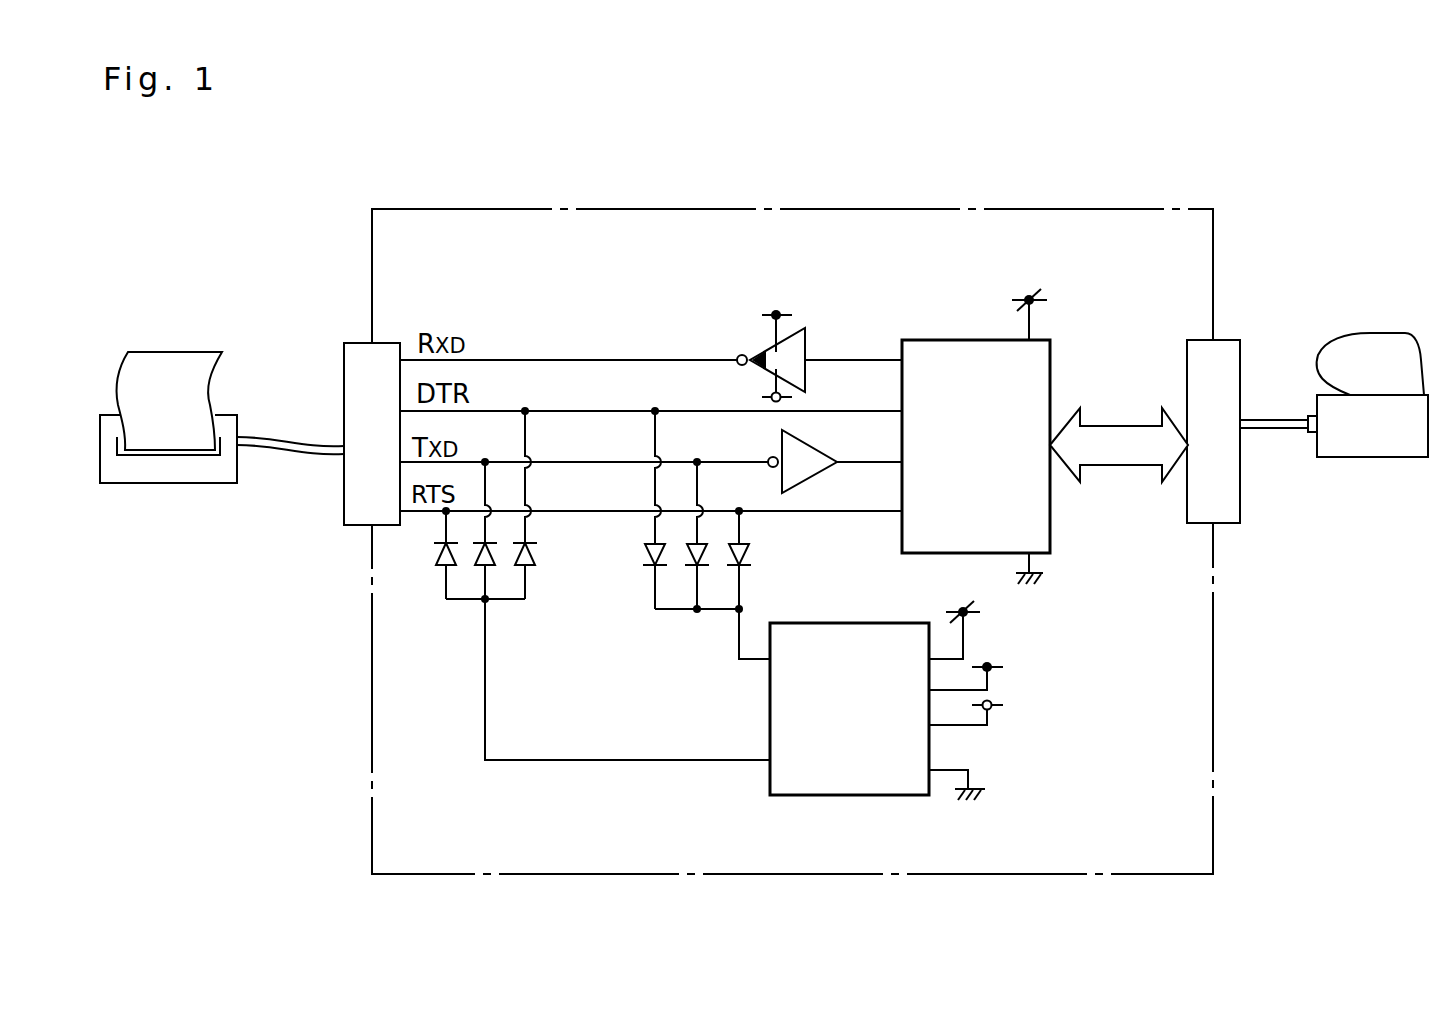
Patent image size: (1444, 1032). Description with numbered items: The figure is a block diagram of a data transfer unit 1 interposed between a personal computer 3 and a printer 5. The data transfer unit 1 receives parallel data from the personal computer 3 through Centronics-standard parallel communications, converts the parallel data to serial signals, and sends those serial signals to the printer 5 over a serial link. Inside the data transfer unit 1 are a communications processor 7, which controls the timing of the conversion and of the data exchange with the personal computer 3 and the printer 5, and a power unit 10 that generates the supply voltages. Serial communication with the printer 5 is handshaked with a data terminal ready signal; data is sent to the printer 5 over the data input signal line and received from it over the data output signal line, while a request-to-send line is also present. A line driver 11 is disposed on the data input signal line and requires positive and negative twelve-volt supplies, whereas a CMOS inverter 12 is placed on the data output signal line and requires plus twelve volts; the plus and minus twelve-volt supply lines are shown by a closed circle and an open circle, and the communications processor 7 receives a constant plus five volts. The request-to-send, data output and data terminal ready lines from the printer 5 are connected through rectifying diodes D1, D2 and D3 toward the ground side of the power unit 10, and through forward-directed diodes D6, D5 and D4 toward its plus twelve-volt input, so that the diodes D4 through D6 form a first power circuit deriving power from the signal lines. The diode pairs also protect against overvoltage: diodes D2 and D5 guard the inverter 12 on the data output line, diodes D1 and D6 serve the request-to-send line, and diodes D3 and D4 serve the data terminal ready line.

The data transfer unit 1 is at (957, 209).
The personal computer 3 is at (1398, 457).
The printer 5 is at (197, 484).
The communications processor 7 is at (957, 340).
The power unit 10 is at (875, 796).
The line driver 11 is at (806, 341).
The CMOS inverter 12 is at (830, 449).
The diode D1 is at (435, 565).
The diode D2 is at (472, 567).
The diode D3 is at (531, 567).
The diode D4 is at (645, 550).
The diode D5 is at (692, 550).
The diode D6 is at (750, 550).